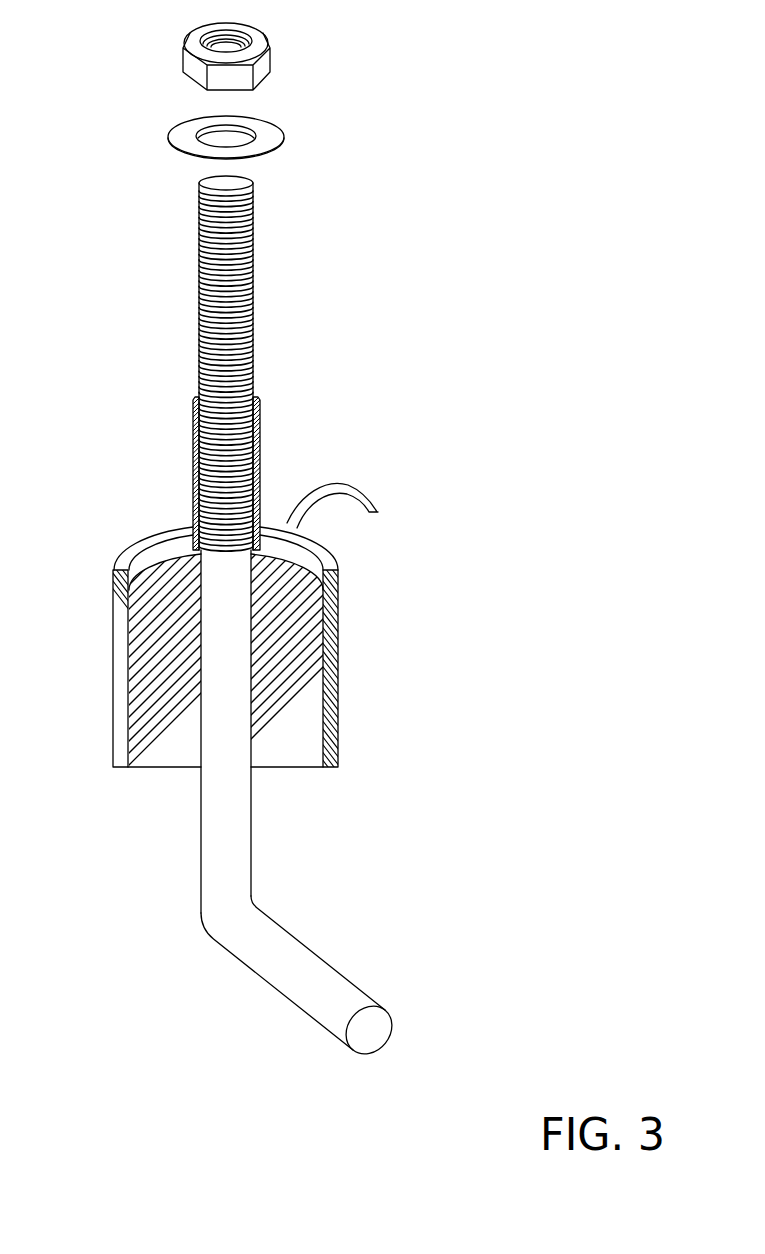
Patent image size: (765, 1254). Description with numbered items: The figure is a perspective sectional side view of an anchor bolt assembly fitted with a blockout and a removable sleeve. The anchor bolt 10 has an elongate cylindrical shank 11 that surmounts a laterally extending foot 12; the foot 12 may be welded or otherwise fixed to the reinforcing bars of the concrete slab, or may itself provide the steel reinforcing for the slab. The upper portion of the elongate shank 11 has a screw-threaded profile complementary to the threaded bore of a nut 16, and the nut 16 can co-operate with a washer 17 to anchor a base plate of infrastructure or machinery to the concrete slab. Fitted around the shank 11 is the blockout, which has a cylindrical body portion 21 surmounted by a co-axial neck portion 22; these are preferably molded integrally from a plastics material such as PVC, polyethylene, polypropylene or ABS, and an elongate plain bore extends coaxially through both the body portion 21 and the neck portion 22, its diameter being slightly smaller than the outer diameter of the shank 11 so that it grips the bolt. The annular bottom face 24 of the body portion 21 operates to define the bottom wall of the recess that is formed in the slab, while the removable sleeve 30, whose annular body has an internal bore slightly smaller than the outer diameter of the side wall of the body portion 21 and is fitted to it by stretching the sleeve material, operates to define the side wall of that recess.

The anchor bolt 10 is at (266, 619).
The elongate cylindrical shank 11 is at (250, 860).
The laterally extending foot 12 is at (355, 988).
The nut 16 is at (273, 58).
The washer 17 is at (285, 138).
The cylindrical body portion 21 is at (163, 553).
The neck portion 22 is at (262, 435).
The annular bottom face 24 is at (167, 767).
The removable sleeve 30 is at (338, 697).